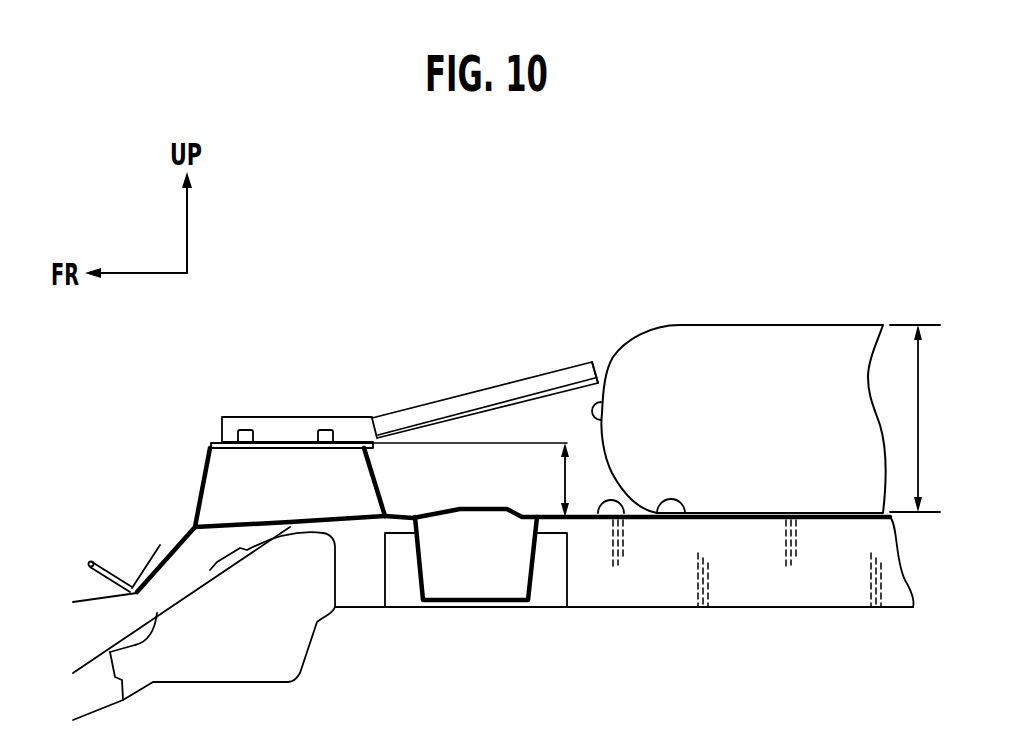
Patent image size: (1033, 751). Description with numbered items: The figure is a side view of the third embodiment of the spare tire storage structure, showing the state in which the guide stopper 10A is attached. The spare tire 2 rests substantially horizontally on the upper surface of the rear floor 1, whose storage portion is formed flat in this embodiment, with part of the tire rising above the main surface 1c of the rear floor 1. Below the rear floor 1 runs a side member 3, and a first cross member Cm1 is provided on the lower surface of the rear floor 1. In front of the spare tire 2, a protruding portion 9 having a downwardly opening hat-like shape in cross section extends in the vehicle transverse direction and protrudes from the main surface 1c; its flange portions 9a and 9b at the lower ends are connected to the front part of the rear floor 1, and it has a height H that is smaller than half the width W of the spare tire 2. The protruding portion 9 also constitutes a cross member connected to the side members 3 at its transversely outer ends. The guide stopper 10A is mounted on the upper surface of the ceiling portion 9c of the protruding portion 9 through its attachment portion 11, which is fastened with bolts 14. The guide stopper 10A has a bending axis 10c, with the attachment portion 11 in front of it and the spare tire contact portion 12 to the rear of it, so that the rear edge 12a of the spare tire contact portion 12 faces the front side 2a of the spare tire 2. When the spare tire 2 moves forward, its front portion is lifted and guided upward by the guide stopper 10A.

The rear floor 1 is at (588, 520).
The main surface 1c is at (688, 520).
The spare tire 2 is at (798, 300).
The front side of the spare tire 2a is at (605, 418).
The side member 3 is at (813, 593).
The protruding portion 9 is at (198, 470).
The flange portion 9a is at (398, 507).
The flange portion 9b is at (178, 533).
The ceiling portion 9c is at (270, 450).
The guide stopper 10A is at (425, 318).
The bending axis 10c is at (372, 437).
The attachment portion 11 is at (300, 440).
The spare tire contact portion 12 is at (490, 400).
The rear edge 12a is at (597, 376).
The bolt 14 is at (240, 428).
The bolt B is at (381, 400).
The height H is at (479, 480).
The width W is at (920, 418).
The first cross member Cm1 is at (417, 580).